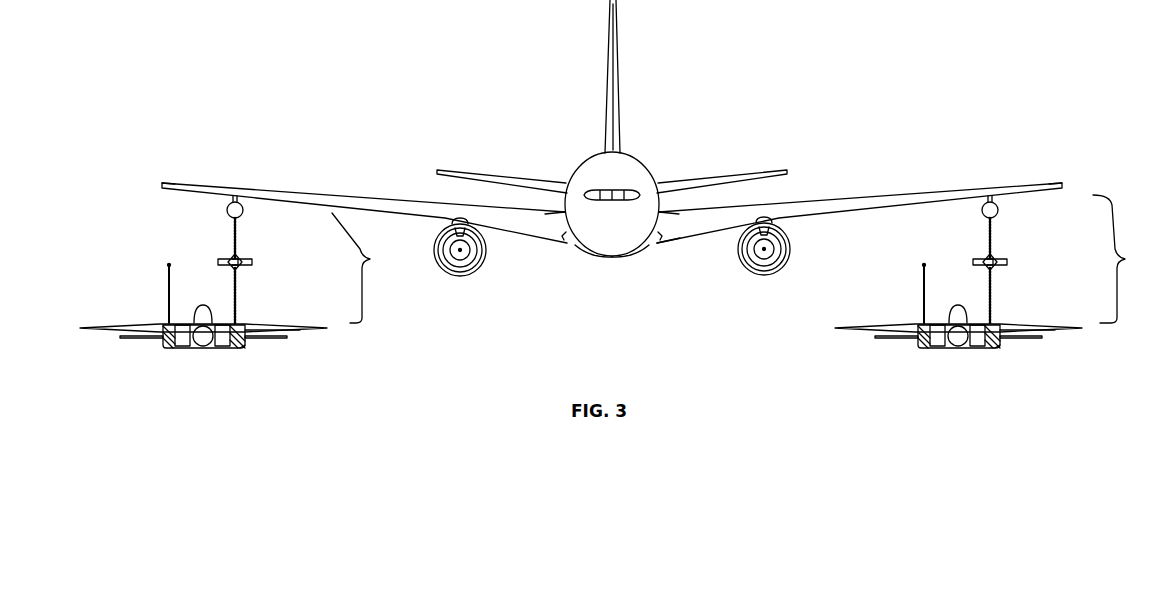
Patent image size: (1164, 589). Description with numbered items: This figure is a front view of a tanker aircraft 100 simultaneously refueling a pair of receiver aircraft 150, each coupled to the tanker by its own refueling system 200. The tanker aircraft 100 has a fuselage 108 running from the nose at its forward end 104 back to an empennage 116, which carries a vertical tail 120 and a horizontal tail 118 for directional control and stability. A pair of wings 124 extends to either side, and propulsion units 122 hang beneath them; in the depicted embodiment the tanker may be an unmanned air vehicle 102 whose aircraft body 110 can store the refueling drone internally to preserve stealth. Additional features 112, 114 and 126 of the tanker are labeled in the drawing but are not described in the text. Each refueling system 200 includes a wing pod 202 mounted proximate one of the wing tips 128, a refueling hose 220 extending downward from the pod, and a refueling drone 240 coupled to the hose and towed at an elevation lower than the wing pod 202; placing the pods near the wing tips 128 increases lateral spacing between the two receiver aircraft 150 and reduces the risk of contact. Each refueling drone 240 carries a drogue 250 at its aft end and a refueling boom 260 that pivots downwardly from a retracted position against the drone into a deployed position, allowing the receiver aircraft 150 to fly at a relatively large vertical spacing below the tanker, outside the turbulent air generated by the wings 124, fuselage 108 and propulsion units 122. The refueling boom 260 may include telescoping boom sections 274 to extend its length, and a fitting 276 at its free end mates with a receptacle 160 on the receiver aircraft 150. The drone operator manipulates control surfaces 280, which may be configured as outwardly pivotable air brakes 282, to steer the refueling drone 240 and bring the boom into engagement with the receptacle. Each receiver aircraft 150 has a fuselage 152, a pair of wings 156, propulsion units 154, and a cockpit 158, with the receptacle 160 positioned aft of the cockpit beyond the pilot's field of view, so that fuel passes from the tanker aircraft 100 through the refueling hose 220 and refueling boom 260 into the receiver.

The tanker aircraft 100 is at (617, 190).
The unmanned air vehicle 102 is at (645, 161).
The forward end 104 is at (626, 222).
The fuselage 108 is at (662, 203).
The aircraft body 110 is at (562, 204).
The lower fuselage 112 is at (592, 250).
The fuselage bottom 114 is at (612, 258).
The empennage 116 is at (616, 50).
The horizontal tail 118 is at (480, 171).
The vertical tail 120 is at (607, 62).
The propulsion units 122 is at (460, 278).
The wings 124 is at (350, 190).
The wing root fairing 126 is at (670, 233).
The wing tips 128 is at (161, 181).
The receiver aircraft 150 is at (574, 332).
The fuselage 152 is at (200, 345).
The propulsion units 154 is at (163, 347).
The wings 156 is at (133, 325).
The cockpit 158 is at (203, 305).
The receptacle 160 is at (238, 348).
The refueling system 200 is at (747, 259).
The wing pod 202 is at (226, 210).
The refueling hose 220 is at (232, 232).
The refueling drone 240 is at (238, 271).
The drogue 250 is at (168, 266).
The refueling boom 260 is at (238, 292).
The boom sections 274 is at (258, 332).
The fitting 276 is at (248, 336).
The control surfaces 280 is at (252, 260).
The air brakes 282 is at (612, 262).